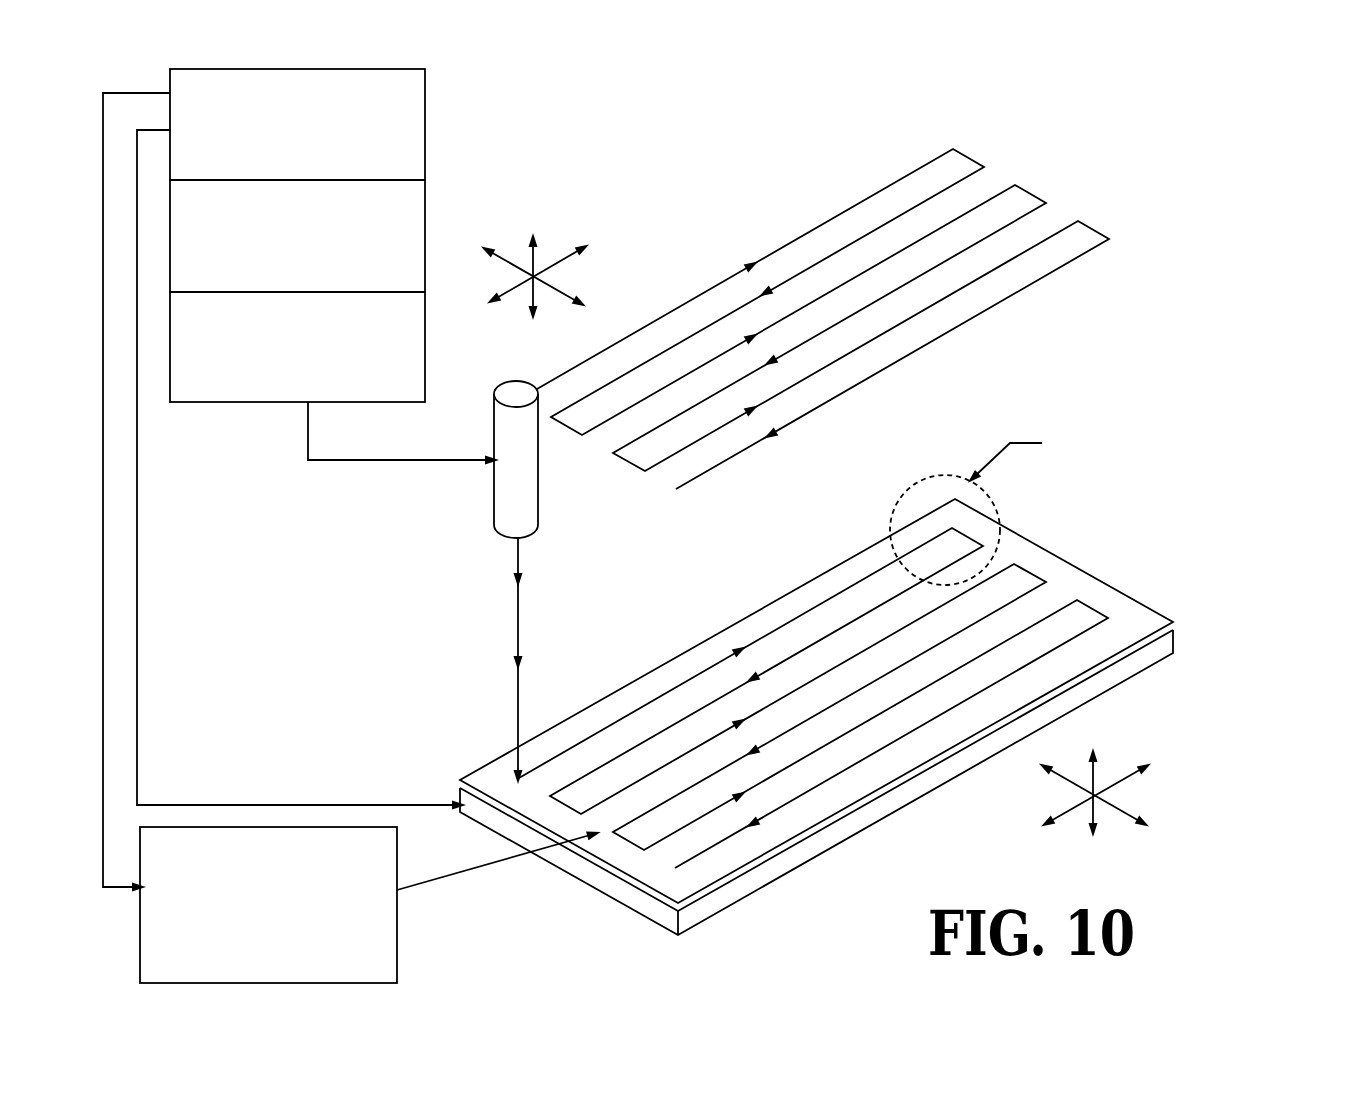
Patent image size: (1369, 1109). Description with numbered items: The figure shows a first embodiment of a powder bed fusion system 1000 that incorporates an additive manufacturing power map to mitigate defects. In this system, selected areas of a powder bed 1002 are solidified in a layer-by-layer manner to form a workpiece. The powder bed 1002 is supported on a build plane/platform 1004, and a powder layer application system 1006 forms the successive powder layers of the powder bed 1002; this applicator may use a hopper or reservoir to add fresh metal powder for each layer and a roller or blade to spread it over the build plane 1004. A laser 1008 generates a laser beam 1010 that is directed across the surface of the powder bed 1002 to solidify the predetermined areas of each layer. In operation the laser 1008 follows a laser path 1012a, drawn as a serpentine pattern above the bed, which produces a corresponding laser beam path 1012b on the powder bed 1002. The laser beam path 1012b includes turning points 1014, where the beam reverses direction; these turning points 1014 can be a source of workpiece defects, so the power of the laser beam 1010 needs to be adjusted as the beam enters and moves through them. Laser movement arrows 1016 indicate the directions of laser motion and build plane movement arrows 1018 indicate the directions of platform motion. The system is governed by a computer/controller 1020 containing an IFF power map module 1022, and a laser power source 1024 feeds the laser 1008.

The powder bed fusion system 1000 is at (1075, 132).
The powder bed 1002 is at (1137, 623).
The build plane/platform 1004 is at (1107, 682).
The powder layer application system 1006 is at (397, 932).
The laser 1008 is at (493, 510).
The laser beam 1010 is at (516, 610).
The laser path 1012a is at (890, 184).
The laser beam path 1012b is at (813, 686).
The turning points 1014 is at (1000, 524).
The laser movement arrows 1016 is at (586, 247).
The build plane movement arrows 1018 is at (1123, 803).
The Computer/Controller 1020 is at (428, 112).
The IFF Power Map Module 1022 is at (428, 207).
The Laser Power Source 1024 is at (428, 353).